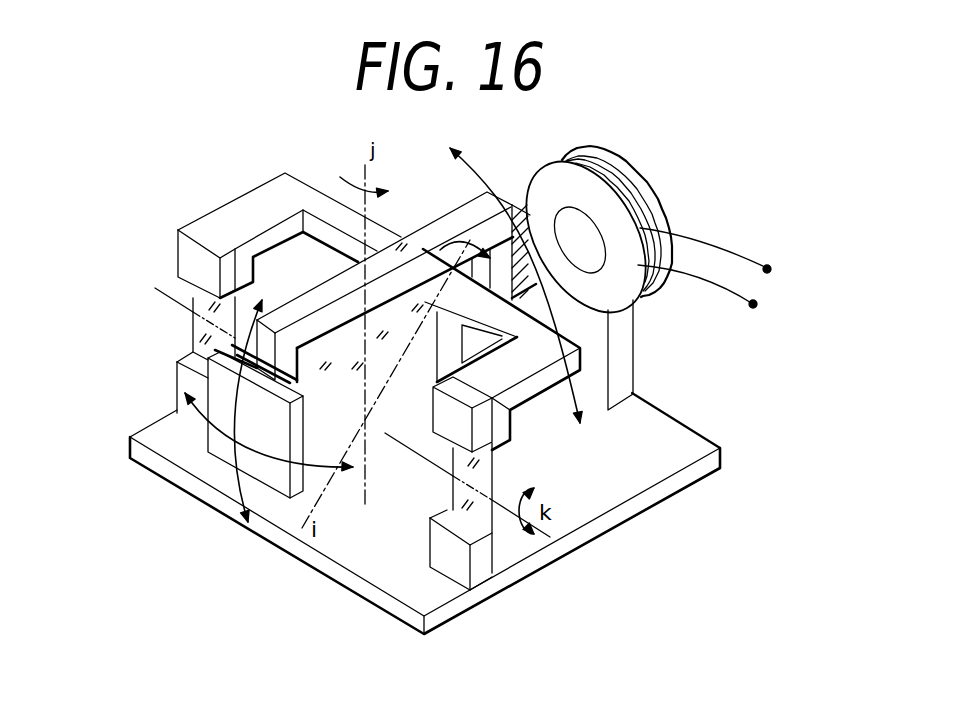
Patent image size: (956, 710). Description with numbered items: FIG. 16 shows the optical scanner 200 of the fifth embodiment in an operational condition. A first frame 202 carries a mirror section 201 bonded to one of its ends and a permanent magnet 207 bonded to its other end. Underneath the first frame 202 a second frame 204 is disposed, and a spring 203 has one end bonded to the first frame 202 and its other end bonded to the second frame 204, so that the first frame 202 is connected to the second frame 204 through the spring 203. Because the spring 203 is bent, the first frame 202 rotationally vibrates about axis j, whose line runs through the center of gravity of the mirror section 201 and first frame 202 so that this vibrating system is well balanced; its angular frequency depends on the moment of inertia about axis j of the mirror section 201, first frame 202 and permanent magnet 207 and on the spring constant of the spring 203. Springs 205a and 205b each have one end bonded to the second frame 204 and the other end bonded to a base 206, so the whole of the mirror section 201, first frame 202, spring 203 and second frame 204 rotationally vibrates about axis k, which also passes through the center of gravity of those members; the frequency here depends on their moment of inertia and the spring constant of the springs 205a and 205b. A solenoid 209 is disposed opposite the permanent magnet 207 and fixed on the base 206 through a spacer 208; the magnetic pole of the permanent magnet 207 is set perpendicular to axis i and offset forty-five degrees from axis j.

The two-dimensional optical scanner 200 is at (188, 203).
The mirror section 201 is at (187, 360).
The first frame 202 is at (418, 240).
The spring 203 is at (393, 335).
The second frame 204 is at (283, 175).
The spring 205a is at (493, 527).
The spring 205b is at (190, 290).
The base 206 is at (672, 447).
The permanent magnet 207 is at (517, 222).
The spacer 208 is at (624, 344).
The solenoid 209 is at (618, 160).